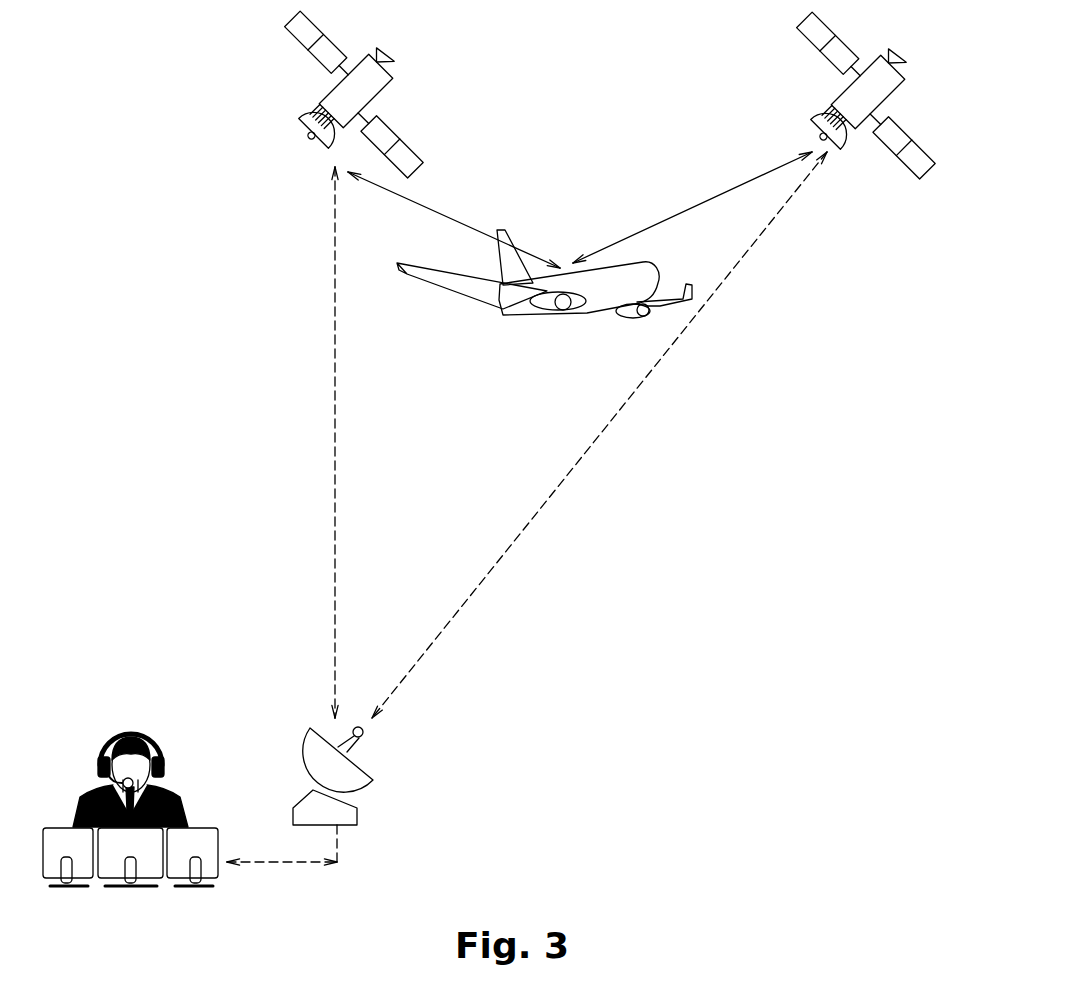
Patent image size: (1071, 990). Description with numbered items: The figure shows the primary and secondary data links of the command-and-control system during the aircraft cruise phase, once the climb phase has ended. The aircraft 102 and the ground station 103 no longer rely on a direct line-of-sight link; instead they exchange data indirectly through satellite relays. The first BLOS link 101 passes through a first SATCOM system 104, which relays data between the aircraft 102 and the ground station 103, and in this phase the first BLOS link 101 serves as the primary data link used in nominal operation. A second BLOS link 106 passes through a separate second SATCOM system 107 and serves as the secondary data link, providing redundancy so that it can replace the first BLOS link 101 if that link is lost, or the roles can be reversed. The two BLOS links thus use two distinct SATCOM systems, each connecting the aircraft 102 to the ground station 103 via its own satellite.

The first BLOS link 101 is at (460, 222).
The aircraft 102 is at (588, 309).
The ground station 103 is at (128, 715).
The first SATCOM system 104 is at (330, 98).
The second BLOS link 106 is at (692, 208).
The second SATCOM system 107 is at (850, 100).